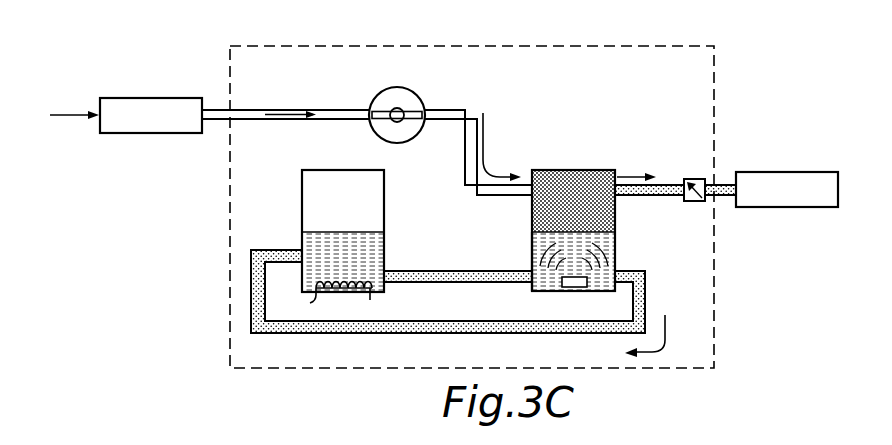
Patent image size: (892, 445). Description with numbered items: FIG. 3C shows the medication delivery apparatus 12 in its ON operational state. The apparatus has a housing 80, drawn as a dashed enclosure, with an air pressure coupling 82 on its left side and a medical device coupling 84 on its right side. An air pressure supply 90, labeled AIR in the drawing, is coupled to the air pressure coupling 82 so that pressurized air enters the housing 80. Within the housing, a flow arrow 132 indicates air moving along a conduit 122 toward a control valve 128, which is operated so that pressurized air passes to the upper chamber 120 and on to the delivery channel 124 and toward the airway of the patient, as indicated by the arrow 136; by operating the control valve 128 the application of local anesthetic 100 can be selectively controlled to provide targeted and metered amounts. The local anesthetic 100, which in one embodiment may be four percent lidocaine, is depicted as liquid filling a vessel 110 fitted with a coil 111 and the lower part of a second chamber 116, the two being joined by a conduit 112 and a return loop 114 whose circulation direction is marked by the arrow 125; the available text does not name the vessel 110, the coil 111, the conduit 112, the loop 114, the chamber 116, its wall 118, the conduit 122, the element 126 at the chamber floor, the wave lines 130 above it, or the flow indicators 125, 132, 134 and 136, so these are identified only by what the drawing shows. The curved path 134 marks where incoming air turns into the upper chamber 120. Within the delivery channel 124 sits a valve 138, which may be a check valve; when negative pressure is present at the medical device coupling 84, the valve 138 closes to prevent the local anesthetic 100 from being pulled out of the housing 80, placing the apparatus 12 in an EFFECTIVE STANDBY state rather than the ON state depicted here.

The medication delivery apparatus 12 is at (511, 184).
The housing 80 is at (612, 46).
The air pressure coupling 82 is at (150, 98).
The medical device coupling 84 is at (790, 172).
The air pressure supply 90 is at (63, 112).
The local anesthetic 100 is at (603, 242).
The liquid reservoir 110 is at (386, 198).
The heater 111 is at (310, 303).
The supply conduit 112 is at (418, 272).
The return conduit 114 is at (648, 294).
The nebulizing chamber 116 is at (621, 213).
The chamber wall 118 is at (530, 243).
The upper chamber 120 is at (527, 170).
The air conduit 122 is at (452, 110).
The delivery channel 124 is at (667, 185).
The liquid circulation direction 125 is at (665, 333).
The ultrasonic transducer 126 is at (573, 289).
The control valve 128 is at (380, 92).
The ultrasonic waves 130 is at (598, 262).
The air flow direction 132 is at (284, 112).
The air flow path 134 is at (486, 116).
The outlet flow direction 136 is at (636, 175).
The valve 138 is at (694, 203).